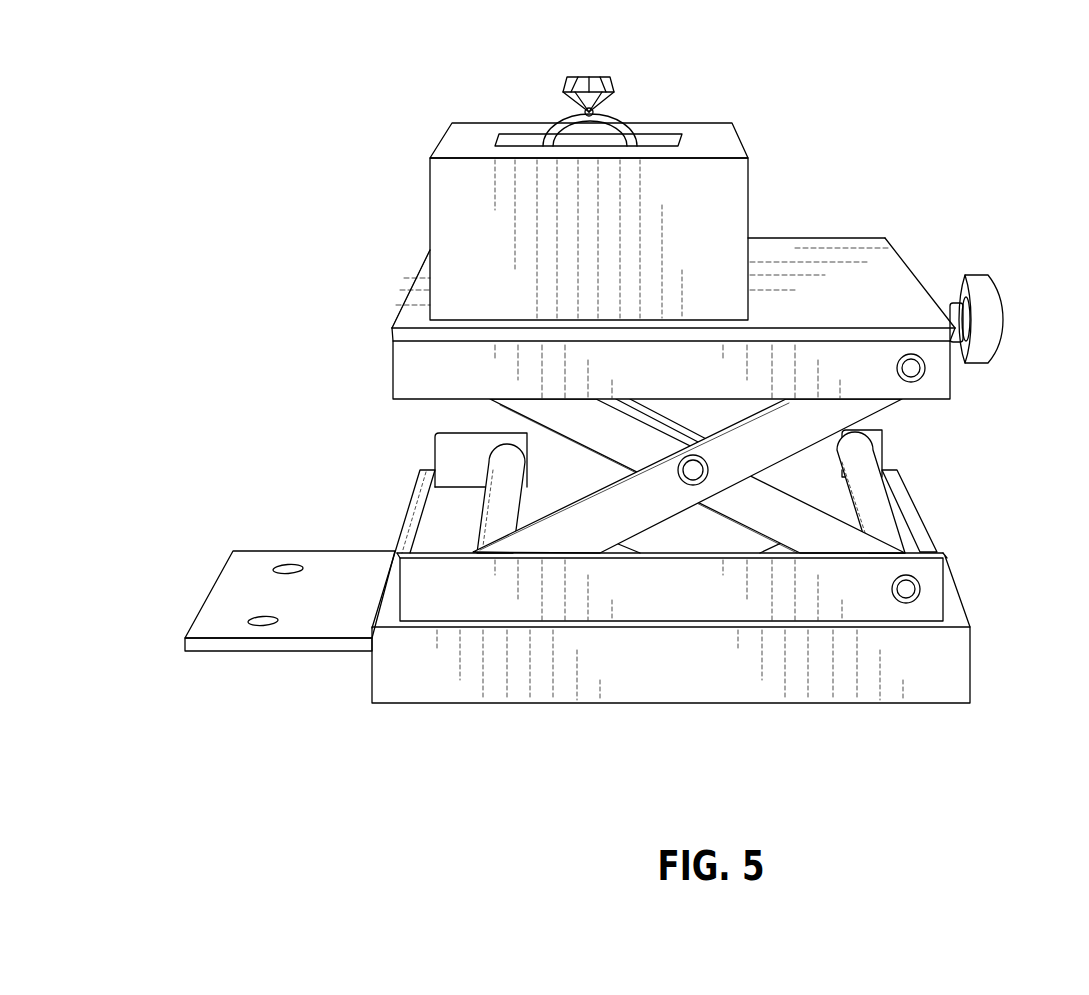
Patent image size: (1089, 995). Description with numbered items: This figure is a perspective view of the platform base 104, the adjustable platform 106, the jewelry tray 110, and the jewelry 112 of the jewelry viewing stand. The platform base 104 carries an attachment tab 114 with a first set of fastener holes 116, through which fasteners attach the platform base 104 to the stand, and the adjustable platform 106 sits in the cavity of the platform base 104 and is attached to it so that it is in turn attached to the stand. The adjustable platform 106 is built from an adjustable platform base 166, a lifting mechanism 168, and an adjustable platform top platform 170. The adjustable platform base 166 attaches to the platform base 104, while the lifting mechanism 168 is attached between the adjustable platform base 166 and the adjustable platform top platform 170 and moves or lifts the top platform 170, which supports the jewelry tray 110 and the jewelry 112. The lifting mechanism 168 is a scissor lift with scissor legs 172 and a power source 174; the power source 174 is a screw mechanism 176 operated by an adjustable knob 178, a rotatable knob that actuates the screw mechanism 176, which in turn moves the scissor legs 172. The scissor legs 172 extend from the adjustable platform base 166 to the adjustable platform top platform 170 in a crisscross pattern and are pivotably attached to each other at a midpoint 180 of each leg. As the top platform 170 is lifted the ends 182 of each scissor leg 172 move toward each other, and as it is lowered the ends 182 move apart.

The platform base 104 is at (953, 610).
The adjustable platform 106 is at (863, 350).
The jewelry tray 110 is at (715, 130).
The jewelry 112 is at (565, 112).
The attachment tab 114 is at (332, 628).
The first set of fastener holes 116 is at (272, 568).
The adjustable platform base 166 is at (720, 610).
The lifting mechanism 168 is at (583, 423).
The adjustable platform top platform 170 is at (422, 333).
The scissor legs 172 is at (537, 407).
The power source 174 is at (900, 475).
The screw mechanism 176 is at (883, 467).
The adjustable knob 178 is at (992, 290).
The midpoint 180 is at (678, 468).
The ends 182 is at (920, 358).